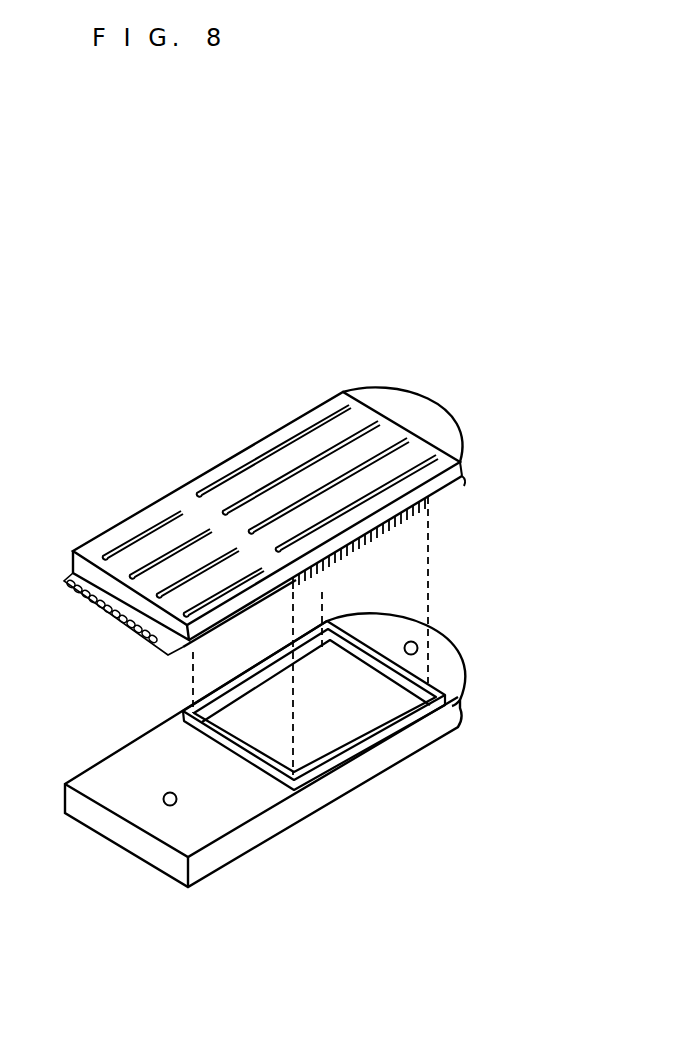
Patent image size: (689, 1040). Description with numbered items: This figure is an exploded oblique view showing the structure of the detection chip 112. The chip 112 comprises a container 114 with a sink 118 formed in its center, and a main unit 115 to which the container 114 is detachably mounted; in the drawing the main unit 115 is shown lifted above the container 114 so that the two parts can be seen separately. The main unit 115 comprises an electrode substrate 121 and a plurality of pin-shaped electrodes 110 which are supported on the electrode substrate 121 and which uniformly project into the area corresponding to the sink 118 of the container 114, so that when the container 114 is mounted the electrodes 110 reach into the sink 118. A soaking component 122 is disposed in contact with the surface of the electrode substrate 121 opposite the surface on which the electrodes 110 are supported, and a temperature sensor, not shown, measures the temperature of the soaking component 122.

The detection chip 112 is at (480, 385).
The main unit 115 is at (187, 482).
The soaking component 122 is at (452, 468).
The electrode substrate 121 is at (455, 476).
The pin-shaped electrodes 110 is at (395, 526).
The container 114 is at (143, 736).
The sink 118 is at (377, 713).